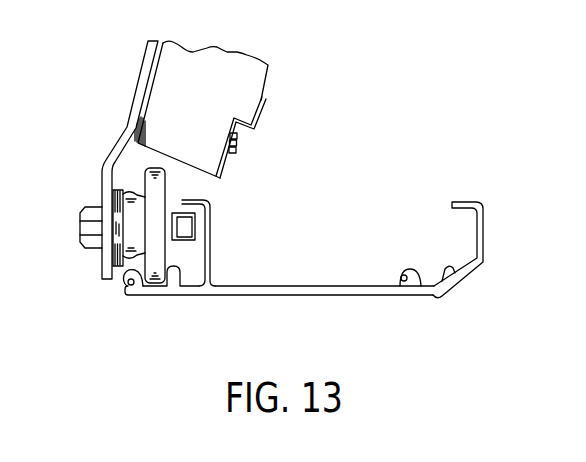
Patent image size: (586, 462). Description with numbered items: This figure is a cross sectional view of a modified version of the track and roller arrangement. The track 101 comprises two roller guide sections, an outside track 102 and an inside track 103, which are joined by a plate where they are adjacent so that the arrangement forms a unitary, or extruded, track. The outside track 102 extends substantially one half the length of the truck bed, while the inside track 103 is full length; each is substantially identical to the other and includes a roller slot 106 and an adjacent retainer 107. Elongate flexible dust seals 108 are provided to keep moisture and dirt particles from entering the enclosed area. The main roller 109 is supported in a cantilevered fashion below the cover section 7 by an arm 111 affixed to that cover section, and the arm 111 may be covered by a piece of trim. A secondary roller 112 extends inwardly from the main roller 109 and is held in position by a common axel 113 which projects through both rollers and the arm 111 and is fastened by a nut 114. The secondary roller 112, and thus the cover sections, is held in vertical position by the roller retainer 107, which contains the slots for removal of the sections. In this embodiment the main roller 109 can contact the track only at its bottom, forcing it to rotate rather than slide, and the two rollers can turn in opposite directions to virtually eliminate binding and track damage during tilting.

The cover section 7 is at (204, 53).
The track 101 is at (387, 130).
The outside track 102 is at (128, 312).
The inside track 103 is at (490, 227).
The roller slot 106 is at (157, 287).
The retainer 107 is at (211, 269).
The dust seal 108 is at (126, 279).
The main roller 109 is at (162, 197).
The arm 111 is at (113, 151).
The secondary roller 112 is at (190, 228).
The common axel 113 is at (170, 247).
The nut 114 is at (86, 209).